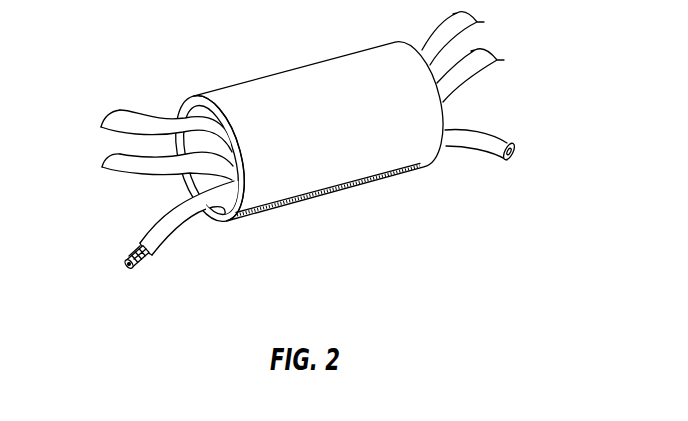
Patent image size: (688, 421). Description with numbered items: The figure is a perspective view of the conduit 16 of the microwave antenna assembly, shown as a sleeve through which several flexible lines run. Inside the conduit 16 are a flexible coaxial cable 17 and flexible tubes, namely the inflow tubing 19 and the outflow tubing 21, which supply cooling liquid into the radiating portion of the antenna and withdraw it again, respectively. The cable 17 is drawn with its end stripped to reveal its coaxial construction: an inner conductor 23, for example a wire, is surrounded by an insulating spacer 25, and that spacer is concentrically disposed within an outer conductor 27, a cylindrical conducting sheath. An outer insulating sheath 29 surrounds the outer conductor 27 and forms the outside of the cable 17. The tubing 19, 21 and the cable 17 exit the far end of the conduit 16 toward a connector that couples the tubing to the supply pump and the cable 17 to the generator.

The conduit 16 is at (307, 72).
The flexible coaxial cable 17 is at (193, 243).
The inflow tubing 19 is at (140, 155).
The outflow tubing 21 is at (167, 121).
The inner conductor 23 is at (132, 269).
The insulating spacer 25 is at (128, 278).
The outer conductor 27 is at (134, 252).
The outer insulating sheath 29 is at (170, 213).